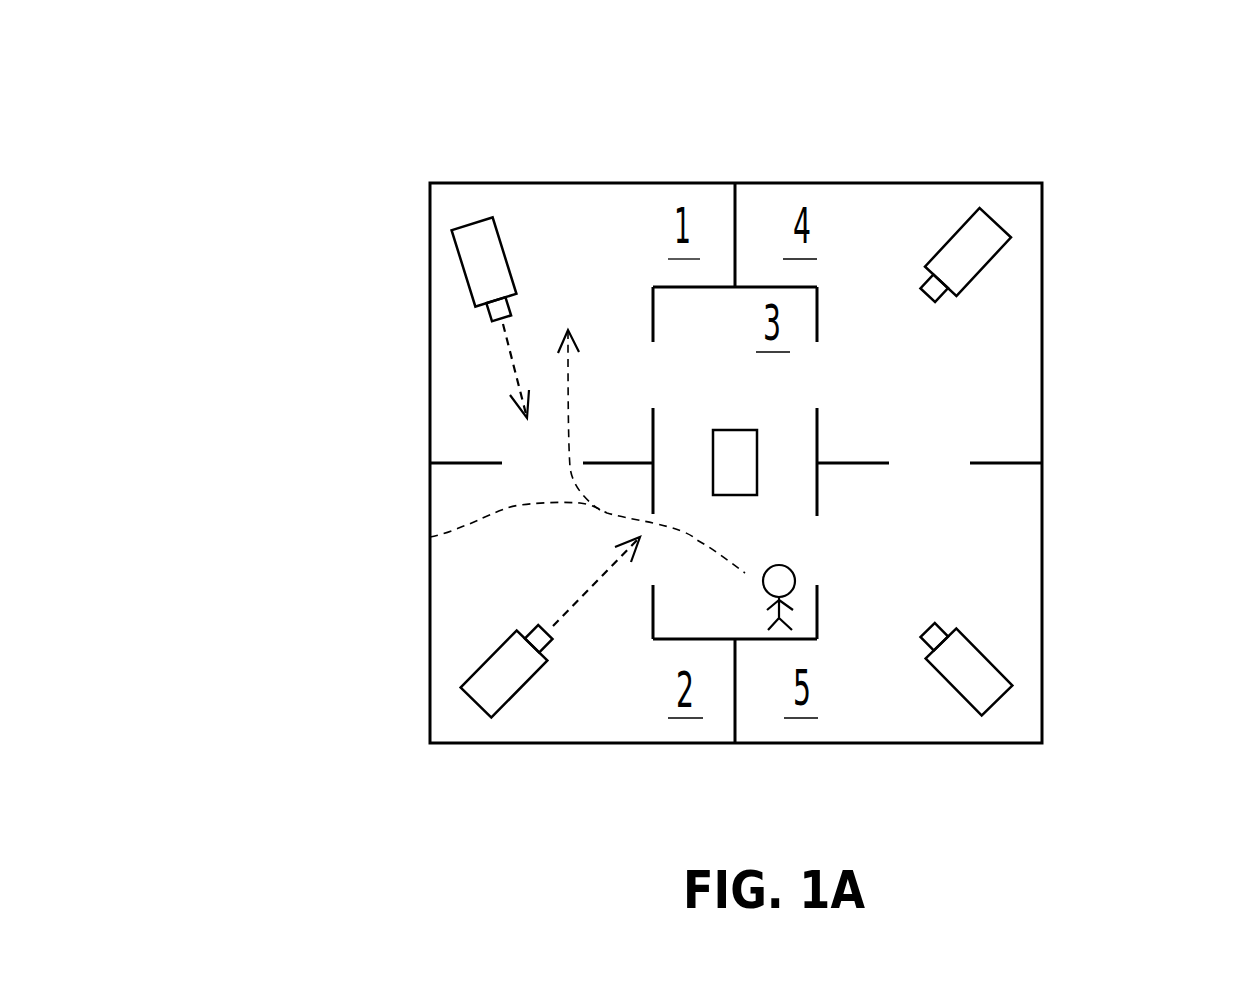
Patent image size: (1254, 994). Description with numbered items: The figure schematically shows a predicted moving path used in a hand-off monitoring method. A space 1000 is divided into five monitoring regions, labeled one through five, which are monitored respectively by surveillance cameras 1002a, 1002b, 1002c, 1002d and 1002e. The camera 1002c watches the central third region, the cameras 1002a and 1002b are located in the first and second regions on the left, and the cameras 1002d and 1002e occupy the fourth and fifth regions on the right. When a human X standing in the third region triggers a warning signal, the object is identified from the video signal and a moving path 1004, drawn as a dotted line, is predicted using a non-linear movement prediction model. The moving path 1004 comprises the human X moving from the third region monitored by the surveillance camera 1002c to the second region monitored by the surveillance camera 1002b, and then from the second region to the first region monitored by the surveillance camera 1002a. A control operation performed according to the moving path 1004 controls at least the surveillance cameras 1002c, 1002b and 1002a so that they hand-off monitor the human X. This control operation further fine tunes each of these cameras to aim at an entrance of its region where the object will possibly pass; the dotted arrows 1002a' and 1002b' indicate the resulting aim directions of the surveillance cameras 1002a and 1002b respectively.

The space 1000 is at (352, 197).
The surveillance camera 1002a is at (392, 270).
The dotted arrow 1002a' is at (395, 371).
The surveillance camera 1002b is at (411, 664).
The dotted arrow 1002b' is at (589, 685).
The surveillance camera 1002c is at (758, 477).
The surveillance camera 1002d is at (983, 270).
The surveillance camera 1002e is at (987, 655).
The moving path 1004 is at (430, 537).
The human X is at (795, 573).